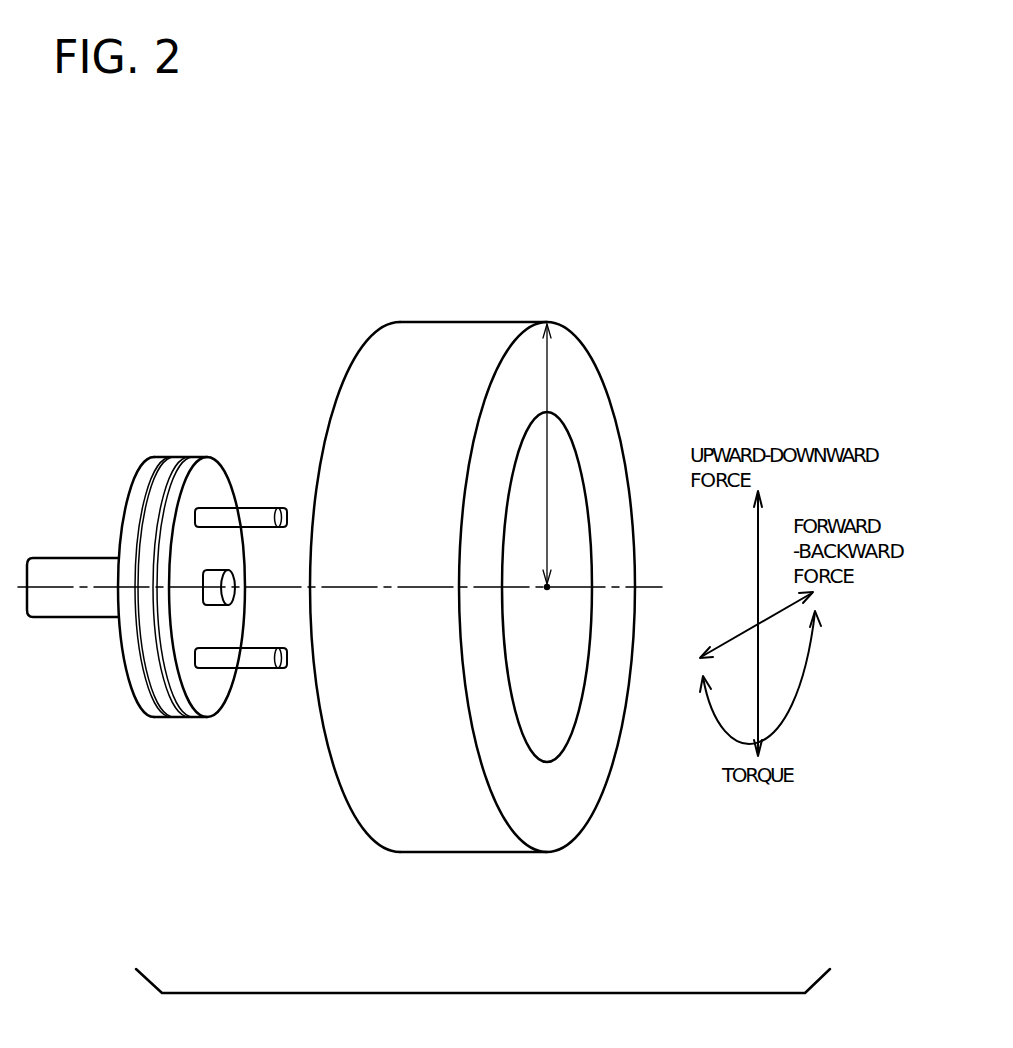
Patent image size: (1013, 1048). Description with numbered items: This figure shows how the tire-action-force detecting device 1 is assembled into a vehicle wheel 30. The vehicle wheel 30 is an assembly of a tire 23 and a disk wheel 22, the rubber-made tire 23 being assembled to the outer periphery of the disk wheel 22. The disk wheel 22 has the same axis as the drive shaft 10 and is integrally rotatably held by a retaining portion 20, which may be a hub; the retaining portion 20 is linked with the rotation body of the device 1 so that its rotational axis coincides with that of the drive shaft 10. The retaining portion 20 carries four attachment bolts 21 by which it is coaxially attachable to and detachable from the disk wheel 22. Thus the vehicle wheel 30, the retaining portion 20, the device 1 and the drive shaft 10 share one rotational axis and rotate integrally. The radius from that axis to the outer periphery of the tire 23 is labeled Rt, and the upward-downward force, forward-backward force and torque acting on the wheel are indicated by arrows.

The tire-action-force detecting device 1 is at (153, 678).
The drive shaft 10 is at (68, 566).
The retaining portion 20 is at (187, 705).
The attachment bolts 21 is at (229, 513).
The disk wheel 22 is at (567, 508).
The tire 23 is at (444, 337).
The vehicle wheel 30 is at (480, 870).